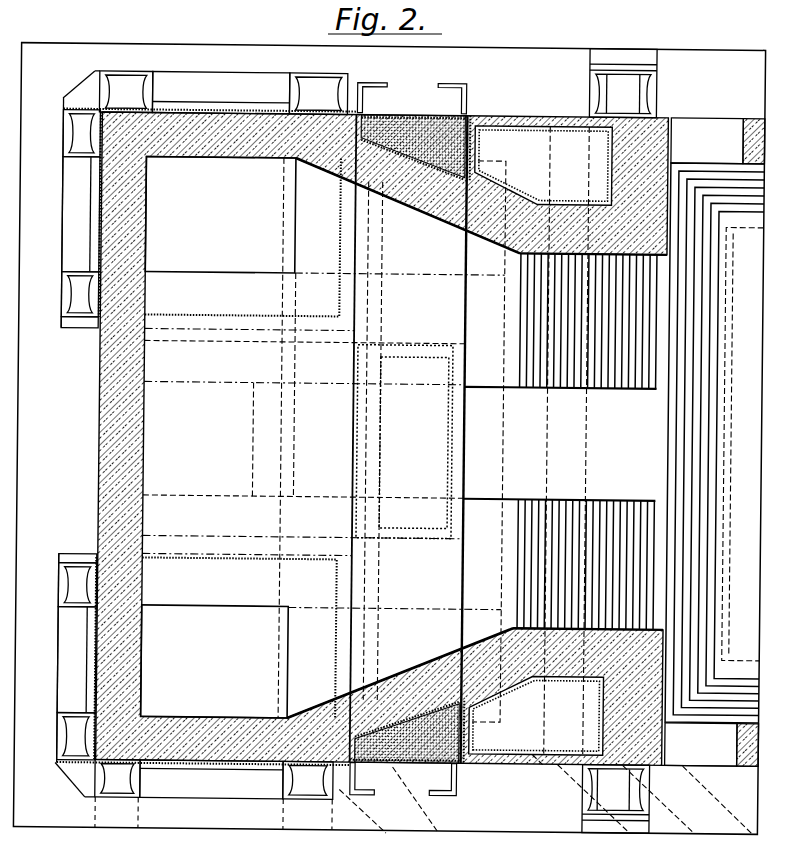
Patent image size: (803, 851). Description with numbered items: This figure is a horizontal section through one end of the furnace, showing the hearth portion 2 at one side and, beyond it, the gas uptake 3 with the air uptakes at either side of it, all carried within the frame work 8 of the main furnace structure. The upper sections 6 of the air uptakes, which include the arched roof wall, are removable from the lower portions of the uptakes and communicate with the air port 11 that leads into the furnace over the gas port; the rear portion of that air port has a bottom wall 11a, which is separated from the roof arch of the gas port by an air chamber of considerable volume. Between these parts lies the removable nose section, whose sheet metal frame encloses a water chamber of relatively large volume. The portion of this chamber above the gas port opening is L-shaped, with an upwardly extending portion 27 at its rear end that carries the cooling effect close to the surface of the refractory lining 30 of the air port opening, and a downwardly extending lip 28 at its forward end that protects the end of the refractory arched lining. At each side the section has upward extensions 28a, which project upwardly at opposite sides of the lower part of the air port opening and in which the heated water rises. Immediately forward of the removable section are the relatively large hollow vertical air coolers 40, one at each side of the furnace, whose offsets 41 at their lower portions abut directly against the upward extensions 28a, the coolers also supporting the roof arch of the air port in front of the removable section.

The hearth portion 2 is at (722, 443).
The gas uptake 3 is at (304, 384).
The upper sections of the air uptakes 6 is at (218, 437).
The frame work of the main furnace structure 8 is at (645, 97).
The air port 11 is at (428, 323).
The bottom wall of the rear portion of the air port 11a is at (226, 530).
The upwardly extending portion 27 is at (377, 453).
The downwardly extending lip 28 is at (461, 447).
The upward extensions 28a is at (414, 114).
The refractory lining of the air port opening 30 is at (404, 442).
The hollow vertical air coolers 40 is at (528, 132).
The offsets 41 is at (463, 763).